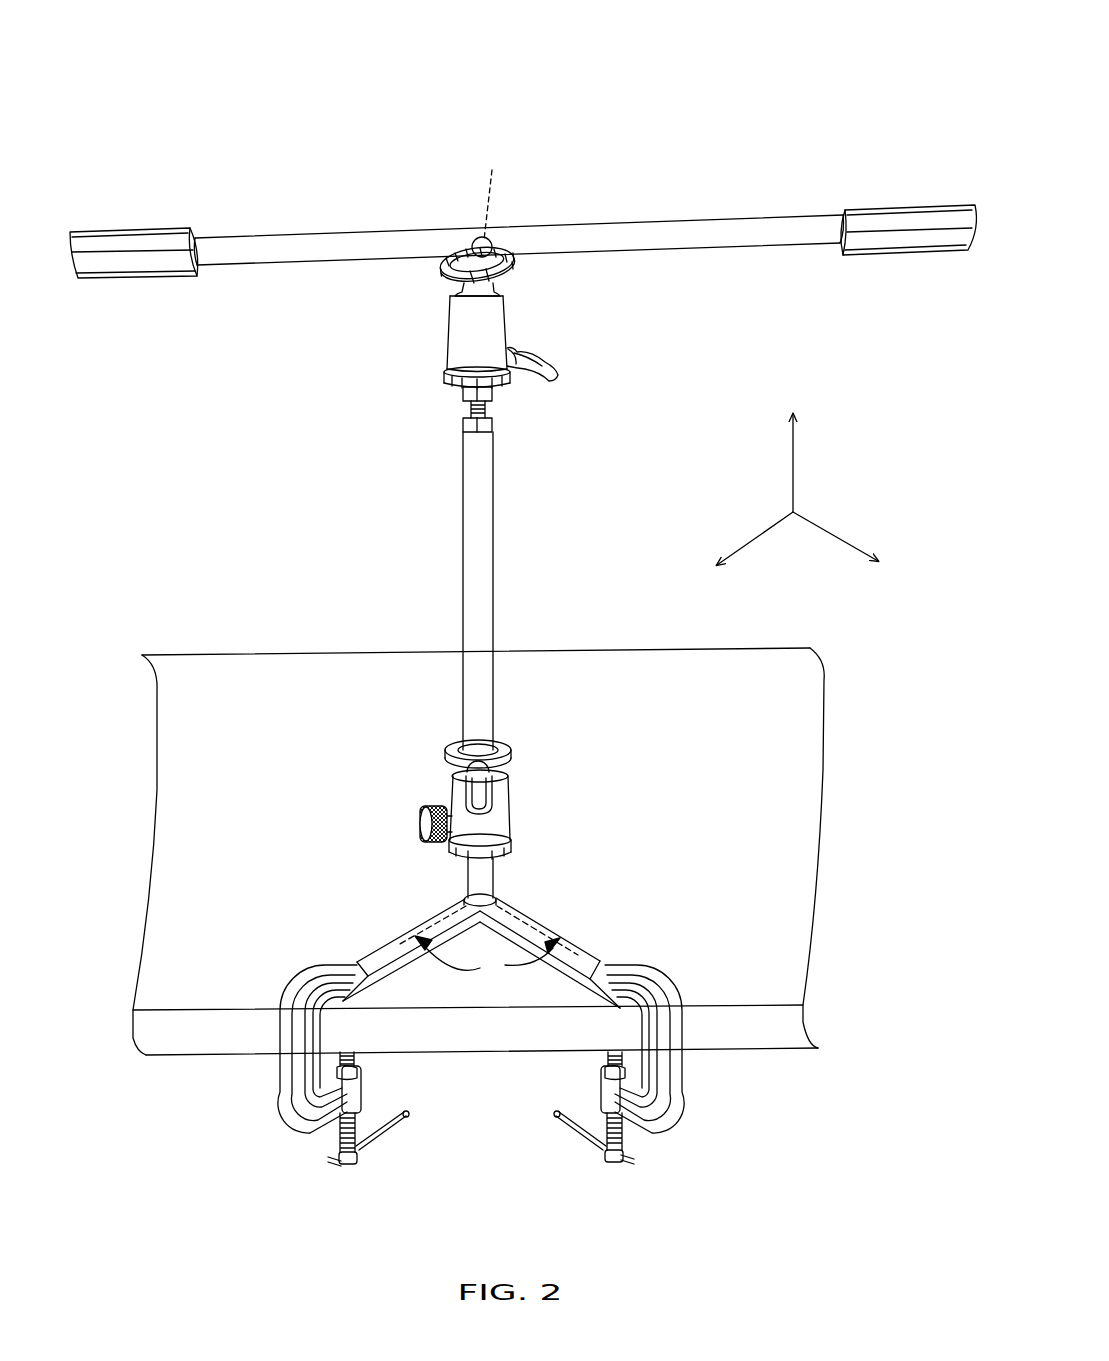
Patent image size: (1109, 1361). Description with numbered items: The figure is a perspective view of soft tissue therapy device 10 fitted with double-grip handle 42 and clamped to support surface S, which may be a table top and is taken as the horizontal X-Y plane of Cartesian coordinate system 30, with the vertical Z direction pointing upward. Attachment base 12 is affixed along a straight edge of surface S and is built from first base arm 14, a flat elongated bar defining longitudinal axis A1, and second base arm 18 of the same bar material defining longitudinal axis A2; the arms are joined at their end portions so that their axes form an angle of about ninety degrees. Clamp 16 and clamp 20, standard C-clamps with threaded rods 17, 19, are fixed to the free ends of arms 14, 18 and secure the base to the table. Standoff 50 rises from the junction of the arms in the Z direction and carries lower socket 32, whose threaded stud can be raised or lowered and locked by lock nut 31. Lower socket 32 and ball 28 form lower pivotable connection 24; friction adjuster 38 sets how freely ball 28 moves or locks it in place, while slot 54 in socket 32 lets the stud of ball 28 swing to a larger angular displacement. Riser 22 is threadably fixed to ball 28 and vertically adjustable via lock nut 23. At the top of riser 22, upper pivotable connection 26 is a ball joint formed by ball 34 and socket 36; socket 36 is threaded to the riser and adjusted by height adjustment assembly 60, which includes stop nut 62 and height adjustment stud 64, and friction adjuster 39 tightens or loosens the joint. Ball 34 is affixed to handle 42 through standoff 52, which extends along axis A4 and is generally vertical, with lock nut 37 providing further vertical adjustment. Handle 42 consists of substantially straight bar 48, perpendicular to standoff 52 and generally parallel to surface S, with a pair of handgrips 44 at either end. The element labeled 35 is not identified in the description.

The soft tissue therapy device 10 is at (667, 90).
The attachment base 12 is at (585, 870).
The first base arm 14 is at (400, 938).
The clamp 16 is at (285, 1090).
The threaded rod 17 is at (337, 1140).
The second base arm 18 is at (565, 935).
The threaded rod 19 is at (625, 1140).
The clamp 20 is at (680, 1085).
The riser 22 is at (492, 553).
The lock nut 23 is at (505, 748).
The lower pivotable connection 24 is at (555, 785).
The upper pivotable connection 26 is at (405, 350).
The ball 28 is at (462, 768).
The Cartesian coordinate system 30 is at (862, 478).
The lock nut 31 is at (500, 868).
The lower socket 32 is at (500, 838).
The ball 34 is at (452, 290).
The base flange 35 is at (445, 378).
The socket 36 is at (495, 318).
The lock nut 37 is at (515, 270).
The friction adjuster 38 is at (418, 824).
The friction adjuster 39 is at (548, 364).
The double-grip handle 42 is at (288, 278).
The handgrips 44 is at (135, 240).
The bar 48 is at (382, 232).
The standoff 50 is at (470, 873).
The standoff 52 is at (448, 270).
The slot 54 is at (490, 800).
The height adjustment assembly 60 is at (445, 417).
The stop nut 62 is at (492, 426).
The height adjustment stud 64 is at (487, 408).
The longitudinal axis A1 is at (375, 940).
The longitudinal axis A2 is at (600, 960).
The longitudinal axis A4 is at (490, 165).
The support surface S is at (800, 800).